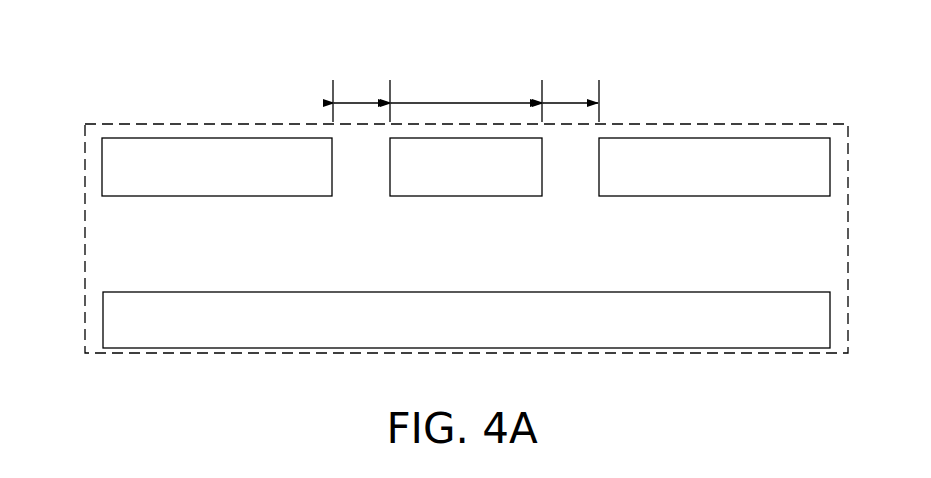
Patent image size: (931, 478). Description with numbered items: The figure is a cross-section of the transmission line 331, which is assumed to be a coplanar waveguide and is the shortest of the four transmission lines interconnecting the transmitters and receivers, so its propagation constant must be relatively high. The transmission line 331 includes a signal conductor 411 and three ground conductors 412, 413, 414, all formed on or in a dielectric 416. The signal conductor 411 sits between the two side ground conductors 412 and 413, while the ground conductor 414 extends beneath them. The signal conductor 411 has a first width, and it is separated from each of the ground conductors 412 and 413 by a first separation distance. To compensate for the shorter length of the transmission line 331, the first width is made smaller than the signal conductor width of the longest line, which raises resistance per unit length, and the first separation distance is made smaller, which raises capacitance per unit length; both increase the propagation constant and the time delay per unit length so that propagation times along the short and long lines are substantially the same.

The transmission line 331 is at (482, 26).
The signal conductor 411 is at (448, 181).
The ground conductor 412 is at (218, 180).
The ground conductor 413 is at (715, 180).
The ground conductor 414 is at (295, 333).
The dielectric 416 is at (83, 258).